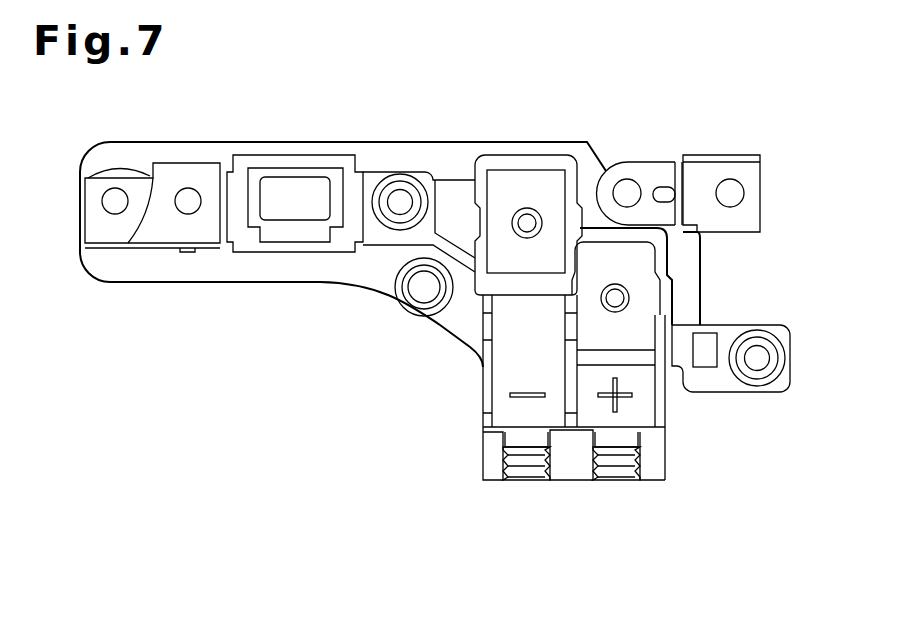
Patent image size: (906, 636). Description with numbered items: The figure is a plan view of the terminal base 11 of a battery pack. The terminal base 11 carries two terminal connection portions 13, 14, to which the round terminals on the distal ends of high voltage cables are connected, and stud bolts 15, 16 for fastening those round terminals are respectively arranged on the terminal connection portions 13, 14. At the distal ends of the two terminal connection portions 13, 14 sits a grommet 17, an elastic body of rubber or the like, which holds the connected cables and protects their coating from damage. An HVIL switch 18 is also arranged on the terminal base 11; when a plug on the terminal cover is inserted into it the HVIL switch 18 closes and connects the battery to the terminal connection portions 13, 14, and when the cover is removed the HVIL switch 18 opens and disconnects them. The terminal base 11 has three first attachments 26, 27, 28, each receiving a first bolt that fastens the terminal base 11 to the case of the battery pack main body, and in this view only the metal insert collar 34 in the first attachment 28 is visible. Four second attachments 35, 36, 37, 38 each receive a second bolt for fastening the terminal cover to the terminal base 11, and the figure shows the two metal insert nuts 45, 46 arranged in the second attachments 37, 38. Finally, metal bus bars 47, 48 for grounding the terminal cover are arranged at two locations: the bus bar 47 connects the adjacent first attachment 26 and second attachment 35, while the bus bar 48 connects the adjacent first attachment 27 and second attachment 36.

The terminal base 11 is at (240, 282).
The terminal connection portion 13 is at (505, 408).
The terminal connection portion 14 is at (645, 422).
The stud bolt 15 is at (527, 215).
The stud bolt 16 is at (630, 297).
The grommet 17 is at (572, 488).
The HVIL switch 18 is at (311, 172).
The first attachment 26 is at (115, 200).
The first attachment 27 is at (630, 190).
The first attachment 28 is at (422, 299).
The insert collar 34 is at (396, 292).
The second attachment 35 is at (188, 200).
The second attachment 36 is at (734, 195).
The second attachment 37 is at (405, 197).
The second attachment 38 is at (762, 356).
The insert nut 45 is at (393, 178).
The insert nut 46 is at (770, 378).
The bus bar 47 is at (150, 235).
The bus bar 48 is at (690, 175).